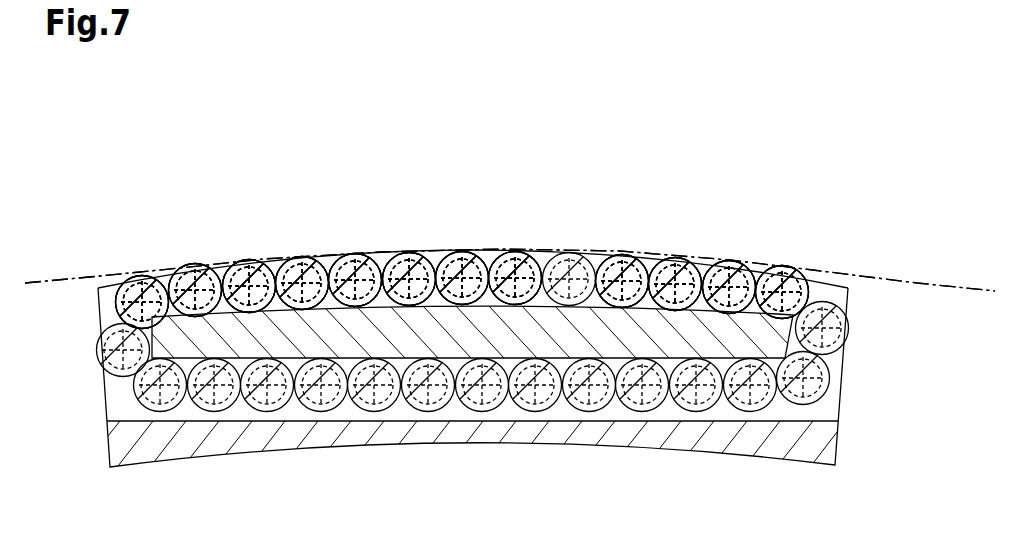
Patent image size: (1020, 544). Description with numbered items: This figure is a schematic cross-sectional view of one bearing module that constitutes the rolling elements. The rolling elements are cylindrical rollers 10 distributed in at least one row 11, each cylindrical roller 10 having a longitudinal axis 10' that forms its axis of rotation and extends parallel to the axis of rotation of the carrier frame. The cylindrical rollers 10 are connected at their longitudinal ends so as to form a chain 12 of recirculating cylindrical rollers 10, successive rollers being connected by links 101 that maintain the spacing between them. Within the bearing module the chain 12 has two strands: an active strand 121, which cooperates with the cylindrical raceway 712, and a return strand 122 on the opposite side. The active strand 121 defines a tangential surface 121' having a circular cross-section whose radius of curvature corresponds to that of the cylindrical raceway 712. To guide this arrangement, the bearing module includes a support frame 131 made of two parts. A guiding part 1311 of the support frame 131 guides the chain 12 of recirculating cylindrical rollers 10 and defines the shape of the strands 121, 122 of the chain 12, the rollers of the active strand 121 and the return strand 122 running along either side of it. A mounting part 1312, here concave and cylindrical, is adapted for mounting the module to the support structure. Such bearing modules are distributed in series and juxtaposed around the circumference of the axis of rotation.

The support frame 131 is at (290, 334).
The guiding part 1311 is at (290, 334).
The mounting part 1312 is at (612, 448).
The active strand 121 is at (473, 228).
The tangential surface 121' is at (510, 237).
The cylindrical raceway 712 is at (867, 276).
The cylindrical roller 10 is at (462, 248).
The row 11 is at (401, 258).
The chain 12 is at (401, 258).
The longitudinal axis 10' is at (569, 237).
The link 101 is at (188, 407).
The return strand 122 is at (342, 408).